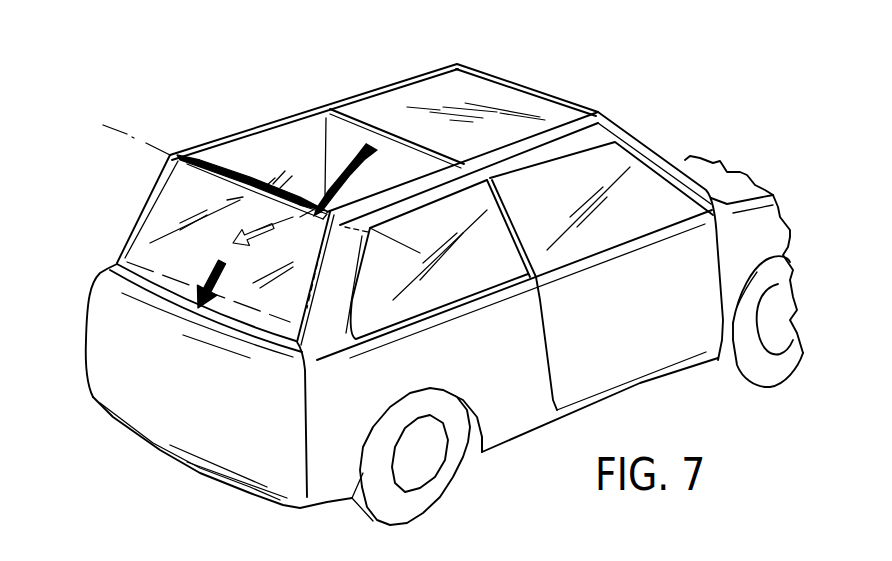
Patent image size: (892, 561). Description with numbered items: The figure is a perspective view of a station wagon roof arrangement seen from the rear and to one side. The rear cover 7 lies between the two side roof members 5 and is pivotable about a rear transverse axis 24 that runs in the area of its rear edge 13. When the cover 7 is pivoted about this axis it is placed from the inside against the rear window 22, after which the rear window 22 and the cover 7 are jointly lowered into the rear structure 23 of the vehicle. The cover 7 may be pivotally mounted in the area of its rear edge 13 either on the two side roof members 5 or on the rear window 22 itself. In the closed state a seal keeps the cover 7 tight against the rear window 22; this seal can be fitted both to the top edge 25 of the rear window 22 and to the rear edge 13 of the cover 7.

The side roof members 5 is at (384, 131).
The rear cover 7 is at (257, 134).
The rear edge 13 is at (252, 135).
The rear window 22 is at (193, 250).
The rear structure 23 is at (222, 452).
The rear transverse axis 24 is at (136, 114).
The top edge 25 is at (286, 116).